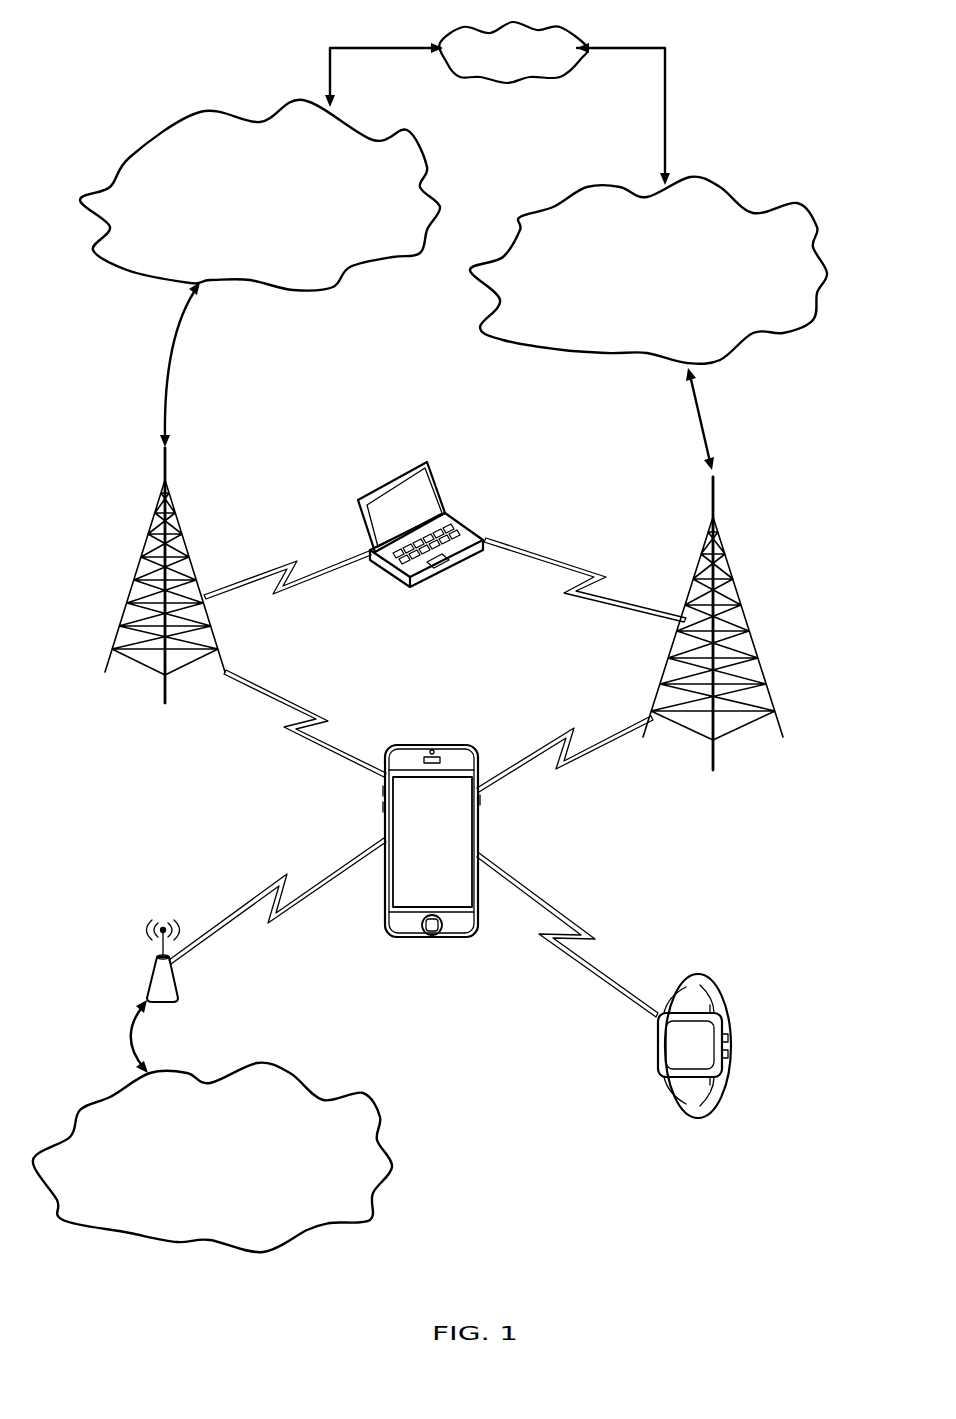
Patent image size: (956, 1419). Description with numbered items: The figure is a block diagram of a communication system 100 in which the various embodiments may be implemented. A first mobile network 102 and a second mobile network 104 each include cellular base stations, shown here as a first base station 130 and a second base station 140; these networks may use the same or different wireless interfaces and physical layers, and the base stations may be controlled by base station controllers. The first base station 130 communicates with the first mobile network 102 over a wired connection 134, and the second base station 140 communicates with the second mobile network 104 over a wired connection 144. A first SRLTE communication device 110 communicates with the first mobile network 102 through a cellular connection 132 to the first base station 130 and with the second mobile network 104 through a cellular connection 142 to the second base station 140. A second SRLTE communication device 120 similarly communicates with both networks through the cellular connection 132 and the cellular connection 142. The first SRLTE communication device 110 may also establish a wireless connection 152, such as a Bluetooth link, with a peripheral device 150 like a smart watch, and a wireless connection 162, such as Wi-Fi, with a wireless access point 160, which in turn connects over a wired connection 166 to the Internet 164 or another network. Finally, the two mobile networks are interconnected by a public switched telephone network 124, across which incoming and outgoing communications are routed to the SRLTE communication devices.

The communication system 100 is at (183, 72).
The first mobile network 102 is at (317, 290).
The second mobile network 104 is at (588, 187).
The first SRLTE communication device 110 is at (478, 820).
The second SRLTE communication device 120 is at (362, 497).
The public switched telephone network (PSTN) 124 is at (512, 85).
The first base station 130 is at (140, 573).
The cellular connection 132 is at (293, 558).
The wired connection 134 is at (172, 352).
The second base station 140 is at (702, 540).
The cellular connection 142 is at (530, 560).
The wired connection 144 is at (693, 412).
The peripheral device 150 is at (705, 972).
The wireless connection 152 is at (555, 908).
The wireless access point 160 is at (150, 972).
The wireless connection 162 is at (268, 883).
The Internet 164 is at (377, 1102).
The wired connection 166 is at (142, 1047).